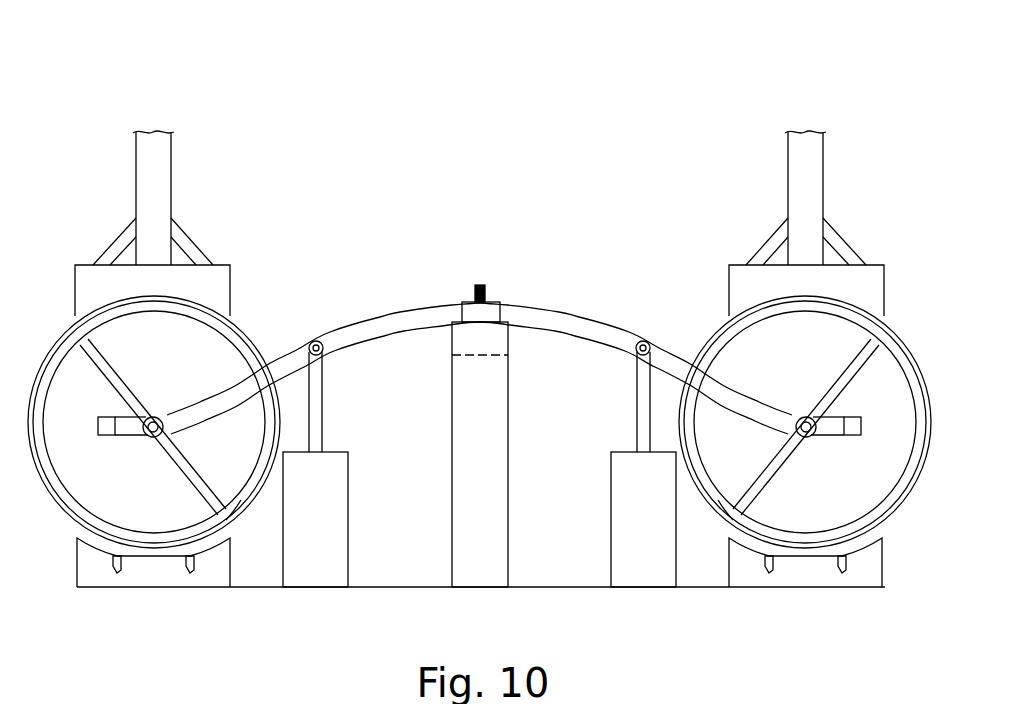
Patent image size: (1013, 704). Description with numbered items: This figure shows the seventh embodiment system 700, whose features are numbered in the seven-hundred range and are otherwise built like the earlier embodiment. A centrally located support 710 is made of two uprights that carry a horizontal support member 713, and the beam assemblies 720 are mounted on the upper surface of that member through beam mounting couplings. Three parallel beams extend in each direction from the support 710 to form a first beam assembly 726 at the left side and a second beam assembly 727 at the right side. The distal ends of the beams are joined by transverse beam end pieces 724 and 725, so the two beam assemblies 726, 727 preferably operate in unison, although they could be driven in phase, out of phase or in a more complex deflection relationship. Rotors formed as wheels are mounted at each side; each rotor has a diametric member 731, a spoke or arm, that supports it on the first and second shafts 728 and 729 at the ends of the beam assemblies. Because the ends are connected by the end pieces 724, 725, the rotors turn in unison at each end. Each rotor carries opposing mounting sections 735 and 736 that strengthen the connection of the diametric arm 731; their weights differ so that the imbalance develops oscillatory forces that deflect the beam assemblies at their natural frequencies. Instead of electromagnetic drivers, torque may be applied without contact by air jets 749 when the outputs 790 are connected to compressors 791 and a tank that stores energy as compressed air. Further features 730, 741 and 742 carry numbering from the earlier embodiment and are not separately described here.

The seventh embodiment system 700 is at (662, 66).
The support 710 is at (452, 456).
The horizontal support member 713 is at (510, 354).
The beam assemblies 720 is at (479, 343).
The transverse beam end piece 724 is at (104, 438).
The transverse beam end piece 725 is at (853, 438).
The first beam assembly 726 is at (403, 308).
The second beam assembly 727 is at (561, 313).
The first shaft 728 is at (176, 428).
The second shaft 729 is at (786, 430).
The wheel 730 is at (244, 332).
The diametric member 731 is at (117, 359).
The mounting section 735 is at (73, 356).
The mounting section 736 is at (250, 500).
The upper bracket 741 is at (108, 224).
The lower bracket 742 is at (80, 600).
The air jet 749 is at (117, 575).
The output 790 is at (324, 430).
The compressor 791 is at (318, 589).